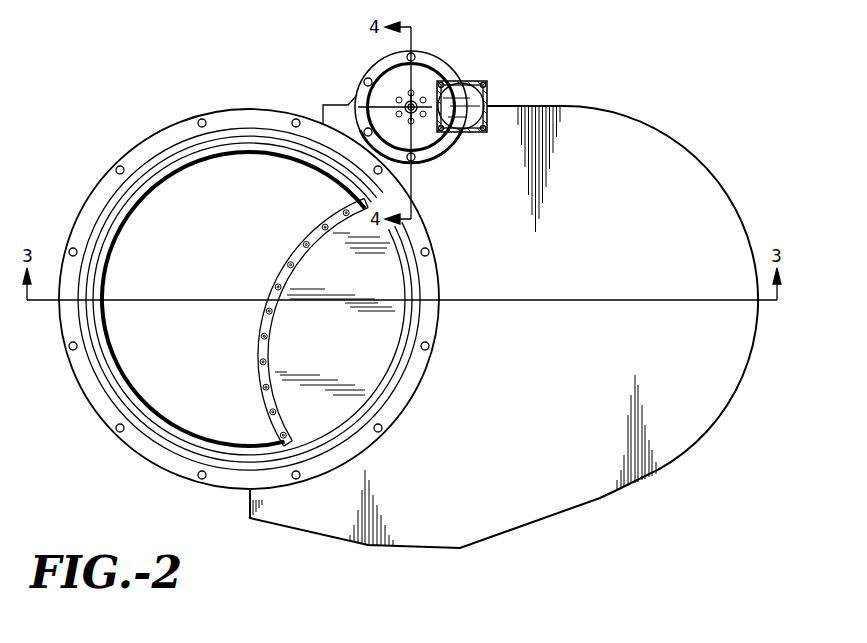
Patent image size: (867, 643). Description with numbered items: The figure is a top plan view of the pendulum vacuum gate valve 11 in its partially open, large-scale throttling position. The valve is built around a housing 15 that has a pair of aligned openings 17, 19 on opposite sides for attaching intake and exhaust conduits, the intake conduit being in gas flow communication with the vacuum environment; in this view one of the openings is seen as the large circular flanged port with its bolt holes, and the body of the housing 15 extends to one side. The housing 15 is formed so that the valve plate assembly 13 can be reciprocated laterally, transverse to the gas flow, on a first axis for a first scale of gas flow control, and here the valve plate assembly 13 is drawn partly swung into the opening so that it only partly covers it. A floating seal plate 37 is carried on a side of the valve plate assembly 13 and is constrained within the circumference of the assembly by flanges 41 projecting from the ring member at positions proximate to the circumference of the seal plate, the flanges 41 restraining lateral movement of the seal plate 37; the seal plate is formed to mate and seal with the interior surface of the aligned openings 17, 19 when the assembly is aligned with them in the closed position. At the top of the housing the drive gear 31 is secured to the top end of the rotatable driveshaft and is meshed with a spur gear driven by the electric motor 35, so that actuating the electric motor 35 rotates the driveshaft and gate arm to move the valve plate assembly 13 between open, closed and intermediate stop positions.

The pendulum vacuum gate valve 11 is at (508, 325).
The valve plate assembly 13 is at (300, 343).
The housing 15 is at (663, 185).
The aligned opening 17 is at (249, 299).
The aligned opening 19 is at (141, 204).
The drive gear 31 is at (422, 80).
The electric motor 35 is at (487, 90).
The floating seal plate 37 is at (290, 322).
The flanges 41 is at (262, 361).